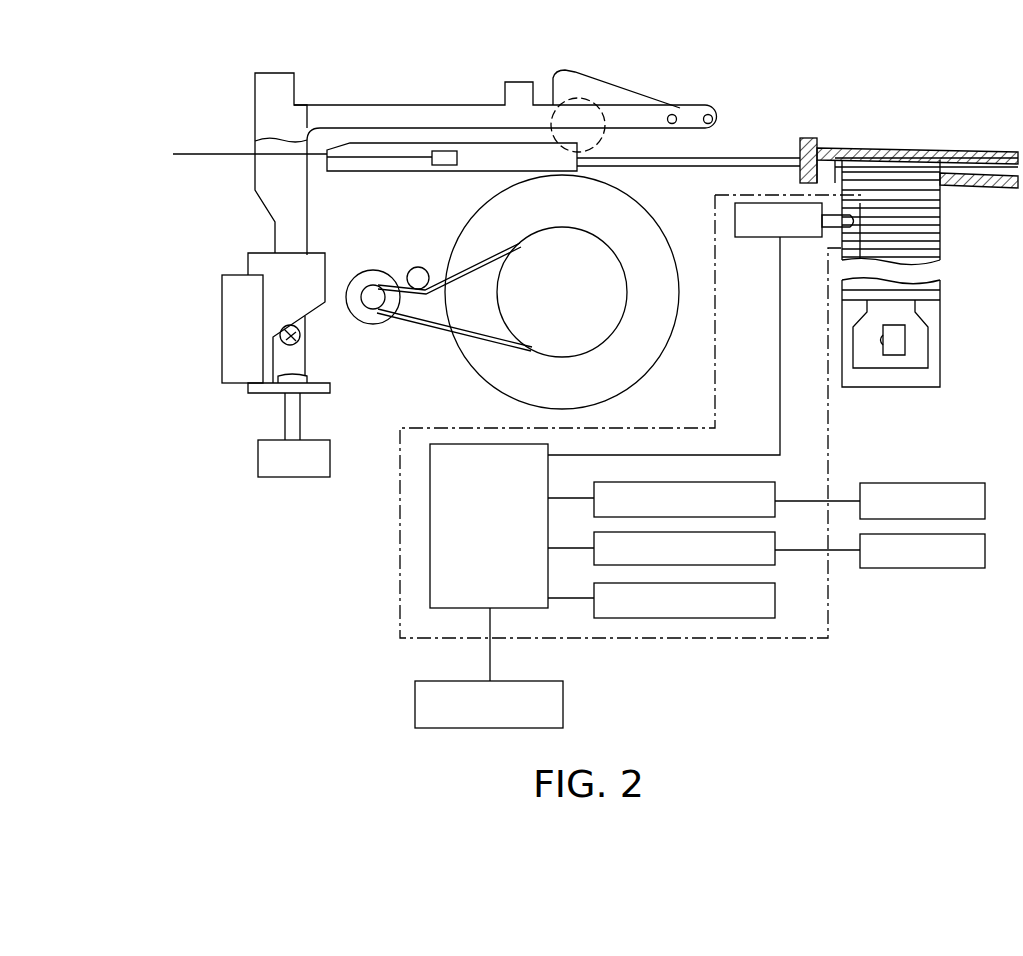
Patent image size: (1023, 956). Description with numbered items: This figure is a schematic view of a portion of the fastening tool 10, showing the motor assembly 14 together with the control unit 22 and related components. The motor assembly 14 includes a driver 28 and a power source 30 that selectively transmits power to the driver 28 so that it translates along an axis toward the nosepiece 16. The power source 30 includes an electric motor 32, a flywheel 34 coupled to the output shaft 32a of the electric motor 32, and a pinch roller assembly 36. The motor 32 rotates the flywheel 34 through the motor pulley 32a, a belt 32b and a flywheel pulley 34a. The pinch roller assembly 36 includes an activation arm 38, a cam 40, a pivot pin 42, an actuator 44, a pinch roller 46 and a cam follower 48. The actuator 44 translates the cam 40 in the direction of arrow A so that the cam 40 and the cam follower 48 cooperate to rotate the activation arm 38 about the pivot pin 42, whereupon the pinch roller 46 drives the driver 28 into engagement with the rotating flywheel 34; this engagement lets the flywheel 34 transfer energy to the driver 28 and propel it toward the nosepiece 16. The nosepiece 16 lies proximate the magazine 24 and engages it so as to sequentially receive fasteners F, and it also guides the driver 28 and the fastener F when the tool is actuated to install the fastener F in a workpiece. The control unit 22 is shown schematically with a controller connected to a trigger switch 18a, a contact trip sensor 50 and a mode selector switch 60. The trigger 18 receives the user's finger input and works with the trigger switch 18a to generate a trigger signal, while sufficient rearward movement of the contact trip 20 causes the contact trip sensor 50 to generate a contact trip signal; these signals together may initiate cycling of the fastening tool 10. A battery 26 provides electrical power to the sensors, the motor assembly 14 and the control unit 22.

The fastening tool 10 is at (173, 400).
The motor assembly 14 is at (428, 95).
The nosepiece 16 is at (873, 149).
The trigger 18 is at (960, 483).
The trigger switch 18a is at (775, 486).
The contact trip 20 is at (958, 568).
The control unit 22 is at (631, 447).
The magazine 24 is at (957, 226).
The battery 26 is at (415, 703).
The driver 28 is at (470, 166).
The power source 30 is at (436, 305).
The electric motor 32 is at (373, 318).
The output shaft 32a is at (373, 290).
The belt 32b is at (508, 341).
The flywheel 34 is at (570, 292).
The flywheel pulley 34a is at (577, 246).
The pinch roller assembly 36 is at (578, 84).
The activation arm 38 is at (305, 117).
The cam 40 is at (262, 258).
The pivot pin 42 is at (709, 113).
The actuator 44 is at (265, 458).
The pinch roller 46 is at (592, 130).
The cam follower 48 is at (301, 338).
The contact trip sensor 50 is at (775, 539).
The mode selector switch 60 is at (775, 591).
The arrow A is at (292, 293).
The fastener F is at (926, 167).